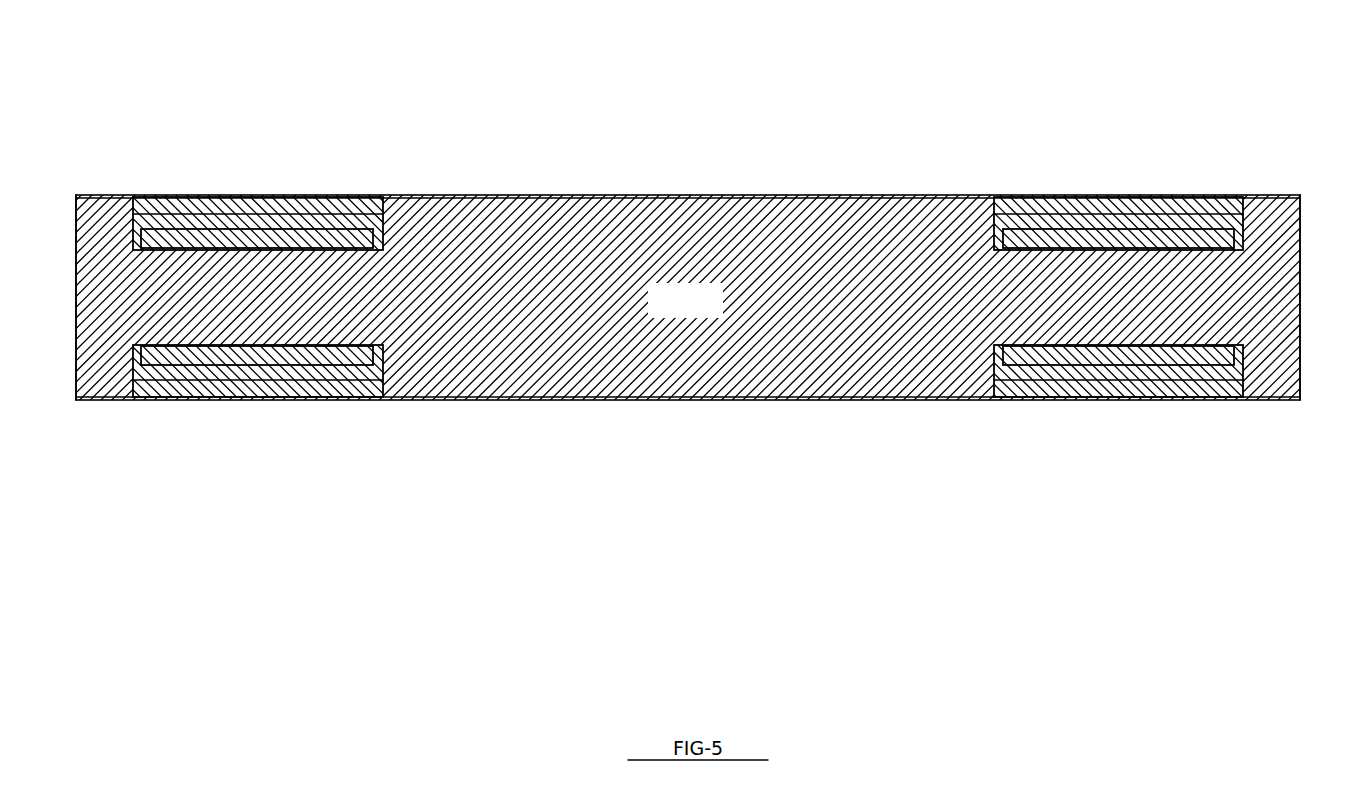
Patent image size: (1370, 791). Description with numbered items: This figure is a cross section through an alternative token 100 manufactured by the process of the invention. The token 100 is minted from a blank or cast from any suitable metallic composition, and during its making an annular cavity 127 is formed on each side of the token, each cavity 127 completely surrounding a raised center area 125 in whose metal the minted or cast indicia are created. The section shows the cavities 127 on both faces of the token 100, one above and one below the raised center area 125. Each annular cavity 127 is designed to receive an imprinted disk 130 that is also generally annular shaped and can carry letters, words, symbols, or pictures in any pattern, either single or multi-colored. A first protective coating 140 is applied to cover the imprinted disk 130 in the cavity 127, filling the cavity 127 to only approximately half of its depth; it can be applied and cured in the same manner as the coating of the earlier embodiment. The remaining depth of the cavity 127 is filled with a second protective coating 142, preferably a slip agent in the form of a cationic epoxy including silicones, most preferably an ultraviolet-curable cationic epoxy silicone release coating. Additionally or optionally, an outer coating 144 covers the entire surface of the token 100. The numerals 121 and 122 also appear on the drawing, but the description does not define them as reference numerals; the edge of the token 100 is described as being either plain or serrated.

The token 100 is at (650, 134).
The panel edge region 121 is at (95, 238).
The panel side edge 122 is at (1300, 318).
The raised center area 125 is at (653, 309).
The annular cavity 127 is at (383, 216).
The imprinted disk 130 is at (182, 197).
The first protective coating 140 is at (346, 223).
The second protective coating 142 is at (272, 197).
The outer coating 144 is at (818, 196).